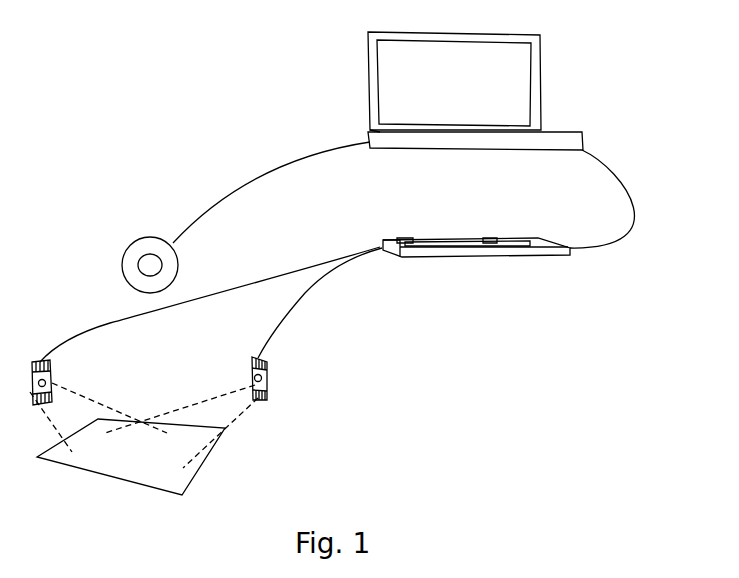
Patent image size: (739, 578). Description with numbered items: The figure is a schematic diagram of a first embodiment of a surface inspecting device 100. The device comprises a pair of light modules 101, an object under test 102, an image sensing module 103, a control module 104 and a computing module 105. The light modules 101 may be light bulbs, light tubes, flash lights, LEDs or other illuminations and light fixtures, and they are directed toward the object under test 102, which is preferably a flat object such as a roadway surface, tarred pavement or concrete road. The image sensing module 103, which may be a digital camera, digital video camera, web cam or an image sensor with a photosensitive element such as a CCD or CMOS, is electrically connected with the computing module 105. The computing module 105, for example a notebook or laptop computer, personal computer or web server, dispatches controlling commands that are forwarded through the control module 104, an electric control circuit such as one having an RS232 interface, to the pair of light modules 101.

The surface inspecting device 100 is at (667, 389).
The light modules 101 is at (58, 375).
The object under test 102 is at (131, 457).
The image sensing module 103 is at (128, 263).
The control module 104 is at (493, 250).
The computing module 105 is at (397, 133).